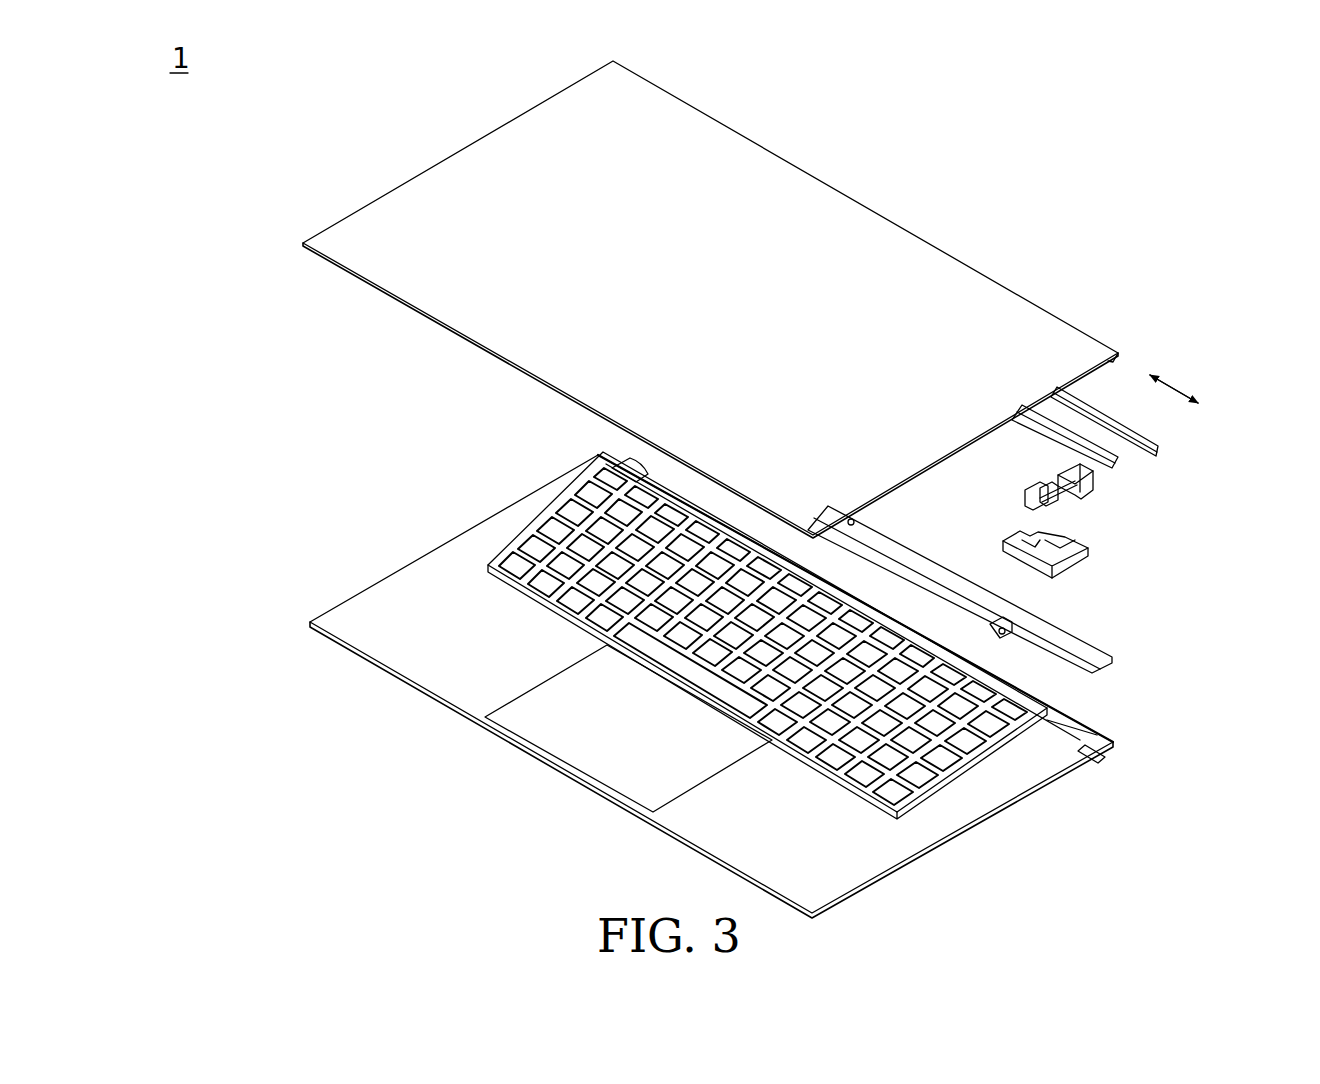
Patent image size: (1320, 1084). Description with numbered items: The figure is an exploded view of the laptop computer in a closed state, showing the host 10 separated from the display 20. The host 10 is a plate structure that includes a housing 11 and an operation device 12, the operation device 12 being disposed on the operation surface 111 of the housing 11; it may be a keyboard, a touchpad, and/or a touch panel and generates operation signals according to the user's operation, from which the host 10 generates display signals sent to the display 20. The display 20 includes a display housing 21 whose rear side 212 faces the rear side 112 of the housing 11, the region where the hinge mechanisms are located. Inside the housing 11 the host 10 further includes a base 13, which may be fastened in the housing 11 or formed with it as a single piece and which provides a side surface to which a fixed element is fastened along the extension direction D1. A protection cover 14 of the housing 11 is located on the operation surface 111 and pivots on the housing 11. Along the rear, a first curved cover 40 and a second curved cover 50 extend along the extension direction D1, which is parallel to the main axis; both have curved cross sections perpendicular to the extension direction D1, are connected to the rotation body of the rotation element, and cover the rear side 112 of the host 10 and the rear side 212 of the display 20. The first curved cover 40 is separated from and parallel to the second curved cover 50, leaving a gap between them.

The host 10 is at (740, 680).
The housing 11 is at (740, 685).
The operation surface 111 is at (355, 608).
The rear side 112 is at (1117, 740).
The operation device 12 is at (553, 592).
The base 13 is at (1096, 556).
The protection cover 14 is at (1050, 632).
The display 20 is at (700, 299).
The display housing 21 is at (710, 299).
The rear side 212 is at (965, 190).
The first curved cover 40 is at (1163, 450).
The second curved cover 50 is at (1116, 464).
The extension direction D1 is at (1184, 381).